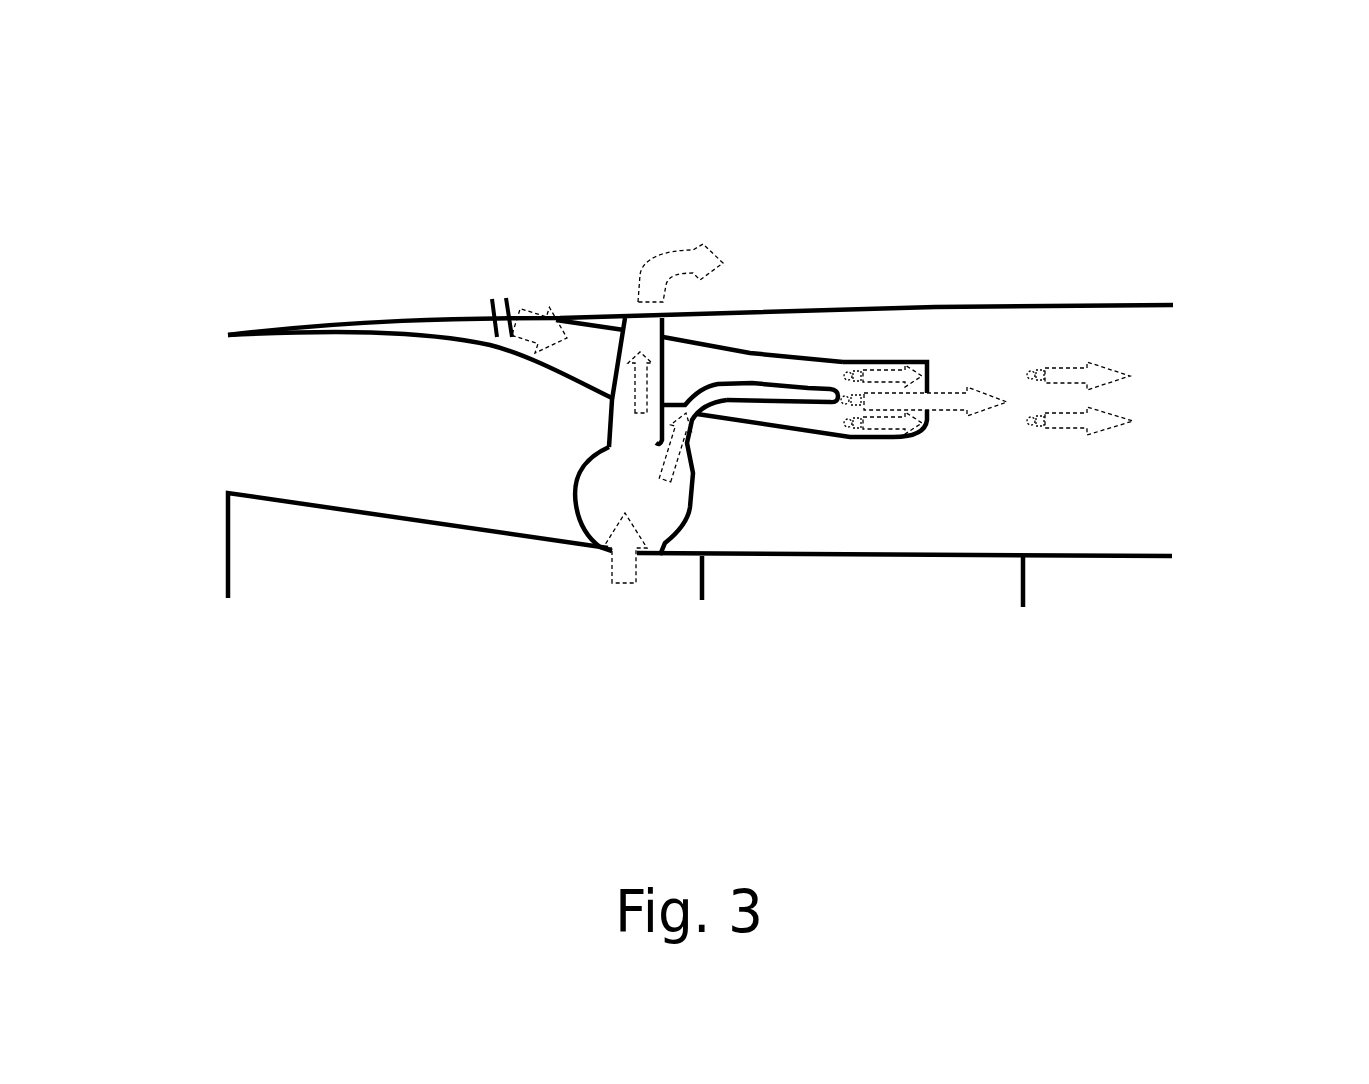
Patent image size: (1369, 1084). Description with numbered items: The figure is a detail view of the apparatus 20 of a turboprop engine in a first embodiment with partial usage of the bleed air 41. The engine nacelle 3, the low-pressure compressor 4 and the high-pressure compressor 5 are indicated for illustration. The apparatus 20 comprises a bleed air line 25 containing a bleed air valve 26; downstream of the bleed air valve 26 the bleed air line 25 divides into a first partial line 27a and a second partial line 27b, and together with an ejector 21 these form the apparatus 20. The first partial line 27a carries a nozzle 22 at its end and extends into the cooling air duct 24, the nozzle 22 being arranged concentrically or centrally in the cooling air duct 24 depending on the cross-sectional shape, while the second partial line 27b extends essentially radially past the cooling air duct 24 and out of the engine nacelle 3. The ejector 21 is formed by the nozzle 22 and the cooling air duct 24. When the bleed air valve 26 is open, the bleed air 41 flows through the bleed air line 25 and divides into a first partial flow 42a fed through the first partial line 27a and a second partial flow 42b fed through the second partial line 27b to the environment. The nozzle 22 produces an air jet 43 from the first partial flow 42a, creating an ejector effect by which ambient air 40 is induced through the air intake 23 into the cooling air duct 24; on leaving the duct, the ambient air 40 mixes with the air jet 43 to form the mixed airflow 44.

The engine nacelle 3 is at (935, 307).
The low-pressure compressor 4 is at (290, 555).
The high-pressure compressor 5 is at (980, 570).
The apparatus 20 is at (748, 503).
The ejector 21 is at (835, 450).
The nozzle 22 is at (808, 388).
The air intake 23 is at (465, 322).
The cooling air duct 24 is at (750, 352).
The bleed air line 25 is at (588, 533).
The bleed air valve 26 is at (638, 500).
The first partial line 27a is at (752, 383).
The second partial line 27b is at (613, 408).
The ambient air 40 is at (537, 318).
The bleed air 41 is at (623, 580).
The first partial flow 42a is at (666, 485).
The second partial flow 42b is at (638, 350).
The air jet 43 is at (983, 400).
The mixed airflow 44 is at (1095, 415).